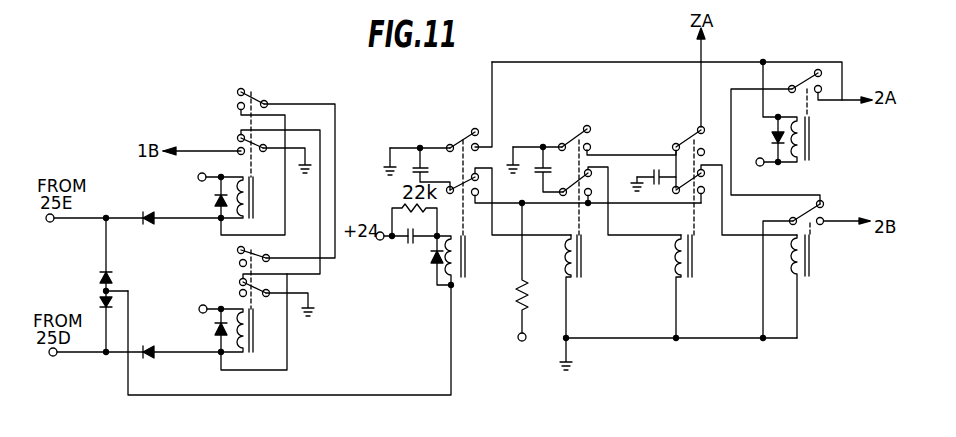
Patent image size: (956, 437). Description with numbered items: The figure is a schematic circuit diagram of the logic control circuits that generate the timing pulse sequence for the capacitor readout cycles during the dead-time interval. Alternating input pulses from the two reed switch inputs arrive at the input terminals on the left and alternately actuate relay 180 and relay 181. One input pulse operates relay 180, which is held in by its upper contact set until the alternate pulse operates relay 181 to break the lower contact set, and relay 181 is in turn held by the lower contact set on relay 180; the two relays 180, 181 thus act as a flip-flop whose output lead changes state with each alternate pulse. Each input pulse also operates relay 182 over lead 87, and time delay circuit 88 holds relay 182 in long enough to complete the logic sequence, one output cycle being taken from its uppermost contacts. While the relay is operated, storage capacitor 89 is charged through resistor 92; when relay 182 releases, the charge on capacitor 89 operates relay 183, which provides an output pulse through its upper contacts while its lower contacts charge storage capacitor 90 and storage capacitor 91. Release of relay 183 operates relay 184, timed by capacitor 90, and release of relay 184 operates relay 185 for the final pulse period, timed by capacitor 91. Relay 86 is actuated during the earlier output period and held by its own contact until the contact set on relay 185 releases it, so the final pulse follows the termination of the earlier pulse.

The relay 86 is at (813, 135).
The lead 87 is at (398, 395).
The time delay circuit 88 is at (407, 226).
The storage capacitor 89 is at (414, 164).
The storage capacitor 90 is at (540, 165).
The storage capacitor 91 is at (652, 172).
The resistor 92 is at (516, 300).
The relay 180 is at (232, 224).
The relay 181 is at (240, 300).
The relay 182 is at (468, 244).
The relay 183 is at (581, 257).
The relay 184 is at (697, 257).
The relay 185 is at (812, 258).